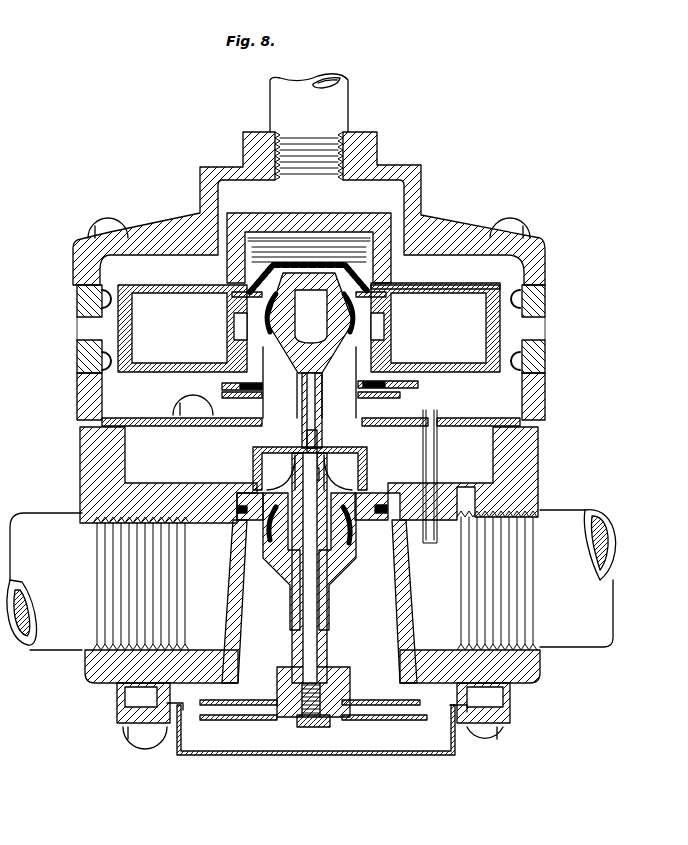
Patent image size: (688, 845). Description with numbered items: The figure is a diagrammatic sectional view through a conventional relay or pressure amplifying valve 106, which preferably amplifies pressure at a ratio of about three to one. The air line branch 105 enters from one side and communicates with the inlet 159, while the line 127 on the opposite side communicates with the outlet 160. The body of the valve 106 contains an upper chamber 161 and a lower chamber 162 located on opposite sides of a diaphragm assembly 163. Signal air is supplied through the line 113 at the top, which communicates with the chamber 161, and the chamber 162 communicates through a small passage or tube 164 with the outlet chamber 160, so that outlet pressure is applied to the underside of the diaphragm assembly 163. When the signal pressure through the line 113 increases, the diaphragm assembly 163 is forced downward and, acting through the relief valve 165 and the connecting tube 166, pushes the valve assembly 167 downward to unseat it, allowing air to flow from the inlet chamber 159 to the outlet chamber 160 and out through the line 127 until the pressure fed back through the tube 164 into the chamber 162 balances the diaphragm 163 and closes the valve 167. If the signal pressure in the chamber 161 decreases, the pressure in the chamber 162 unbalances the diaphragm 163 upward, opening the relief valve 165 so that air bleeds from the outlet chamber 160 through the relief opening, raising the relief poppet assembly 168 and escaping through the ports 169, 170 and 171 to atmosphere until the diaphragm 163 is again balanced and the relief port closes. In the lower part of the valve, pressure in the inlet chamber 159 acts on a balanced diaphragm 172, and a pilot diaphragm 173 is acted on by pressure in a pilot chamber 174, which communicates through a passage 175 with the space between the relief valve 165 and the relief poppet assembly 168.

The air line branch 105 is at (40, 640).
The relay or pressure amplifying valve 106 is at (195, 215).
The line 113 is at (340, 103).
The line 127 is at (590, 512).
The inlet 159 is at (208, 633).
The outlet 160 is at (440, 653).
The chamber 161 is at (391, 197).
The chamber 162 is at (507, 402).
The diaphragm assembly 163 is at (504, 277).
The tube 164 is at (433, 463).
The relief valve 165 is at (300, 347).
The connecting tube 166 is at (320, 443).
The valve assembly 167 is at (333, 622).
The relief poppet assembly 168 is at (332, 262).
The port 169 is at (407, 283).
The port 170 is at (395, 330).
The port 171 is at (540, 327).
The balanced diaphragm 172 is at (270, 680).
The pilot diaphragm 173 is at (423, 727).
The pilot chamber 174 is at (318, 740).
The passage 175 is at (312, 542).